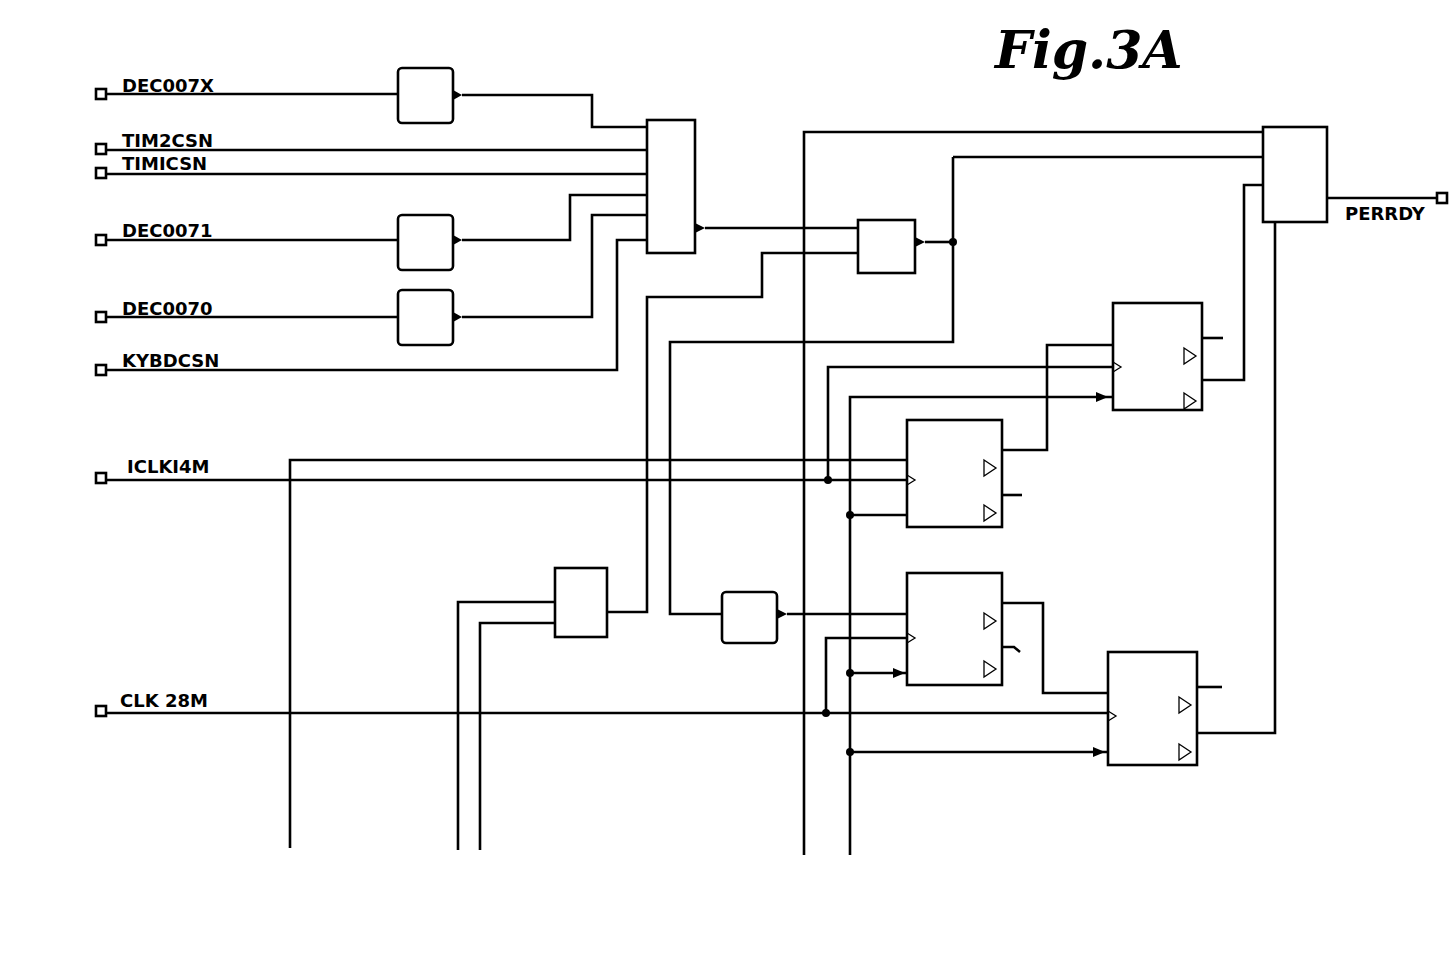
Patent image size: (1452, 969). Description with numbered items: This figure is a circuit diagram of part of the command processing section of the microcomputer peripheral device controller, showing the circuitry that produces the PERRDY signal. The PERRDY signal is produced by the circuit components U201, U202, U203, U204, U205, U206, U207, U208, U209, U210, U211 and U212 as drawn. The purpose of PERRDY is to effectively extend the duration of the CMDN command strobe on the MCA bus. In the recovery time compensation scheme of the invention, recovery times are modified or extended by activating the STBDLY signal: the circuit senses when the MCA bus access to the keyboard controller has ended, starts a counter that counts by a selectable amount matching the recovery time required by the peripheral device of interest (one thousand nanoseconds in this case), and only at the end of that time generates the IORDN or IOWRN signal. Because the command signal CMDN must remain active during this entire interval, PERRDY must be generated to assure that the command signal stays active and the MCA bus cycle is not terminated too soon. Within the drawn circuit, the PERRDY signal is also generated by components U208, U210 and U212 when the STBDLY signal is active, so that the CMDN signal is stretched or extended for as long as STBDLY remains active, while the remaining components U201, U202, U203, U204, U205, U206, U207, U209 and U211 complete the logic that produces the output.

The circuit component U201 is at (462, 109).
The circuit component U202 is at (462, 253).
The circuit component U203 is at (462, 329).
The circuit component U204 is at (688, 199).
The circuit component U205 is at (588, 615).
The circuit component U206 is at (753, 631).
The circuit component U207 is at (897, 257).
The circuit component U208 is at (954, 463).
The circuit component U209 is at (930, 634).
The circuit component U210 is at (1157, 371).
The circuit component U211 is at (1146, 723).
The circuit component U212 is at (1316, 191).